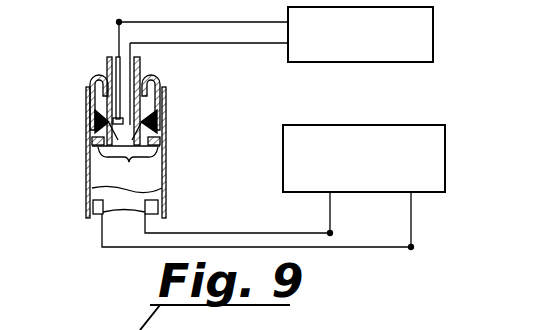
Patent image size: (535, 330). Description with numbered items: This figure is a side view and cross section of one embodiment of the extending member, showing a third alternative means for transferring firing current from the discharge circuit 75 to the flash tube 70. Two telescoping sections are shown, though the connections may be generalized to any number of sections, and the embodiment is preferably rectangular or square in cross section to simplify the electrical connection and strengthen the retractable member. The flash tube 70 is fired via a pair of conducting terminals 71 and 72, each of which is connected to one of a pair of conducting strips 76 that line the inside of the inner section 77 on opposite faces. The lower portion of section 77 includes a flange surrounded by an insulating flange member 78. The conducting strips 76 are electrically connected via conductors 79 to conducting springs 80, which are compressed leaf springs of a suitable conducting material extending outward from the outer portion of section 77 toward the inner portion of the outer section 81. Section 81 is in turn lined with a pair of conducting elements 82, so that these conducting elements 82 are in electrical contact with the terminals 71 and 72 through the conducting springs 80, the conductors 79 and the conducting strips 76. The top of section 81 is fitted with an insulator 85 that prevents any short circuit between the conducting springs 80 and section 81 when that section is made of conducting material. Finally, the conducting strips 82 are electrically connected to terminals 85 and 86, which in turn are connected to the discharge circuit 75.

The flash tube 70 is at (372, 62).
The conducting terminal 71 is at (130, 43).
The conducting terminal 72 is at (117, 22).
The discharge circuit 75 is at (400, 125).
The conducting strips 76 is at (131, 80).
The section 77 is at (108, 63).
The insulating flange member 78 is at (129, 163).
The conductors 79 is at (92, 138).
The conducting springs 80 is at (94, 110).
The section 81 is at (167, 162).
The conducting elements 82 is at (100, 186).
The insulator / terminal 85 is at (94, 83).
The terminal 86 is at (410, 246).